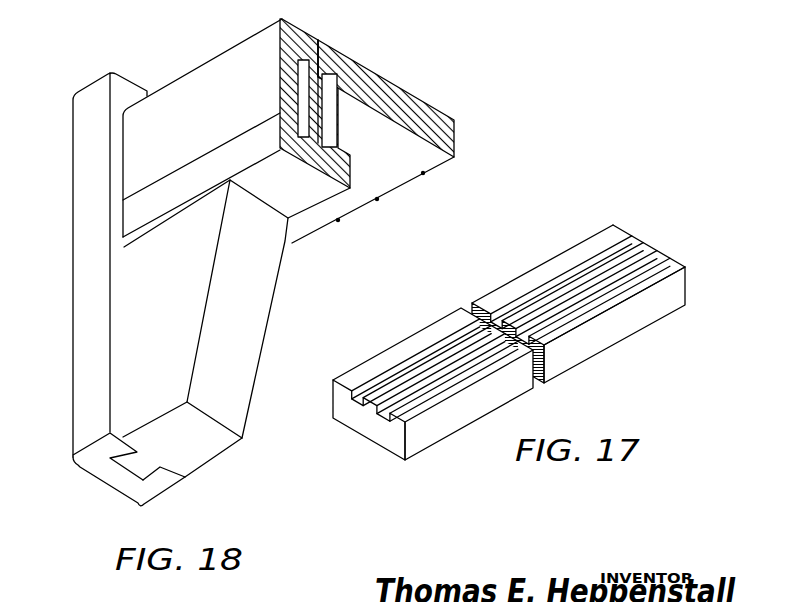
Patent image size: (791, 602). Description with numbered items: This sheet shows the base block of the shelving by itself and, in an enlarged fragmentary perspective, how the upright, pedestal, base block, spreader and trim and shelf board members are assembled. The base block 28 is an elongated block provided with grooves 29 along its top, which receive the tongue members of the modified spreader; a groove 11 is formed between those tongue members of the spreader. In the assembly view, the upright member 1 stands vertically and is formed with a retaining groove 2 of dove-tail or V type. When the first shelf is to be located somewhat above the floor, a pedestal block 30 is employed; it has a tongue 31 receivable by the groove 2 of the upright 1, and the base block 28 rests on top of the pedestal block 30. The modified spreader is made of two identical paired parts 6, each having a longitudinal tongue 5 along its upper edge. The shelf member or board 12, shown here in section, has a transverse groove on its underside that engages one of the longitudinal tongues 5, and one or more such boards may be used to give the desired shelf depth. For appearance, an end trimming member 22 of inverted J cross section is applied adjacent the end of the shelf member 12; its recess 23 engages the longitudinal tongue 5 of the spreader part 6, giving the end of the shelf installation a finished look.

In FIG. 18, the upright member 1 is at (88, 313).
In FIG. 18, the retaining groove 2 is at (127, 483).
In FIG. 18, the longitudinal tongue 5 is at (305, 62).
In FIG. 18, the spreader part 6 is at (323, 121).
In FIG. 18, the groove 11 is at (320, 133).
In FIG. 18, the shelf member 12 is at (410, 110).
In FIG. 18, the end trimming member 22 is at (208, 92).
In FIG. 18, the recess 23 is at (327, 75).
In FIG. 18, the base block 28 is at (310, 195).
In FIG. 17, the base block 28 is at (525, 331).
In FIG. 17, the grooves 29 is at (660, 257).
In FIG. 18, the pedestal block 30 is at (248, 317).
In FIG. 18, the tongue 31 is at (177, 485).